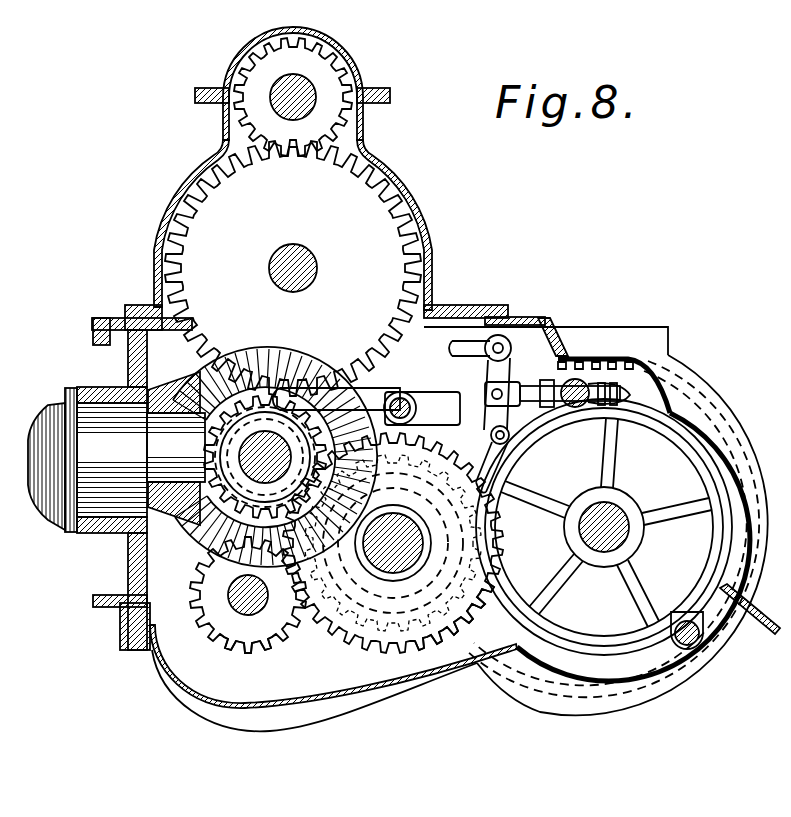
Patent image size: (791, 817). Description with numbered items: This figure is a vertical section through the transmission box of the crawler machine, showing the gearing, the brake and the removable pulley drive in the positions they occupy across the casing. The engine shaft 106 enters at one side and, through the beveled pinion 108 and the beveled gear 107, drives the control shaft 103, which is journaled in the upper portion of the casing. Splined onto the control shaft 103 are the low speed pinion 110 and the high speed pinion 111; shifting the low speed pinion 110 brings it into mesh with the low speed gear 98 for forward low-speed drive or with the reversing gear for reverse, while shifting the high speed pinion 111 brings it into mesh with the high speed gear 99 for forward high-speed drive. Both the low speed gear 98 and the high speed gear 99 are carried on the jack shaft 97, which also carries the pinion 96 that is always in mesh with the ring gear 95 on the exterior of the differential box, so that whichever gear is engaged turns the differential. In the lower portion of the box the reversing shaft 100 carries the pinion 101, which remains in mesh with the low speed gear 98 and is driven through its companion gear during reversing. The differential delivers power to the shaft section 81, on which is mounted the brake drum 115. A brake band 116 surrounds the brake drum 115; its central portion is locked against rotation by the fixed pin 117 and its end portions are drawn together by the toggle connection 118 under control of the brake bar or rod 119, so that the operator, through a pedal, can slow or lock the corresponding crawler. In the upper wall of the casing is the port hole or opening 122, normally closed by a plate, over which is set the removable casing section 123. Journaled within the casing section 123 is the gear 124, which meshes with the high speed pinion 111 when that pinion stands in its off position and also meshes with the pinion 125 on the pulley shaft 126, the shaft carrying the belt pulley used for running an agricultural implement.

The differential shaft section 81 is at (622, 535).
The ring gear 95 is at (487, 665).
The pinion 96 is at (443, 640).
The jack shaft 97 is at (395, 575).
The low speed gear 98 is at (337, 628).
The high speed gear 99 is at (393, 543).
The reversing shaft 100 is at (236, 615).
The pinion 101 is at (255, 645).
The control shaft 103 is at (425, 492).
The engine shaft 106 is at (33, 432).
The beveled gear 107 is at (256, 352).
The beveled pinion 108 is at (163, 398).
The low speed pinion 110 is at (372, 528).
The high speed pinion 111 is at (450, 452).
The brake drum 115 is at (664, 438).
The brake band 116 is at (562, 655).
The fixed pin 117 is at (698, 648).
The toggle connection 118 is at (548, 362).
The brake bar or rod 119 is at (466, 342).
The port hole or opening 122 is at (441, 320).
The removable casing section 123 is at (154, 262).
The gear 124 is at (398, 207).
The pinion 125 is at (340, 74).
The pulley shaft 126 is at (282, 82).